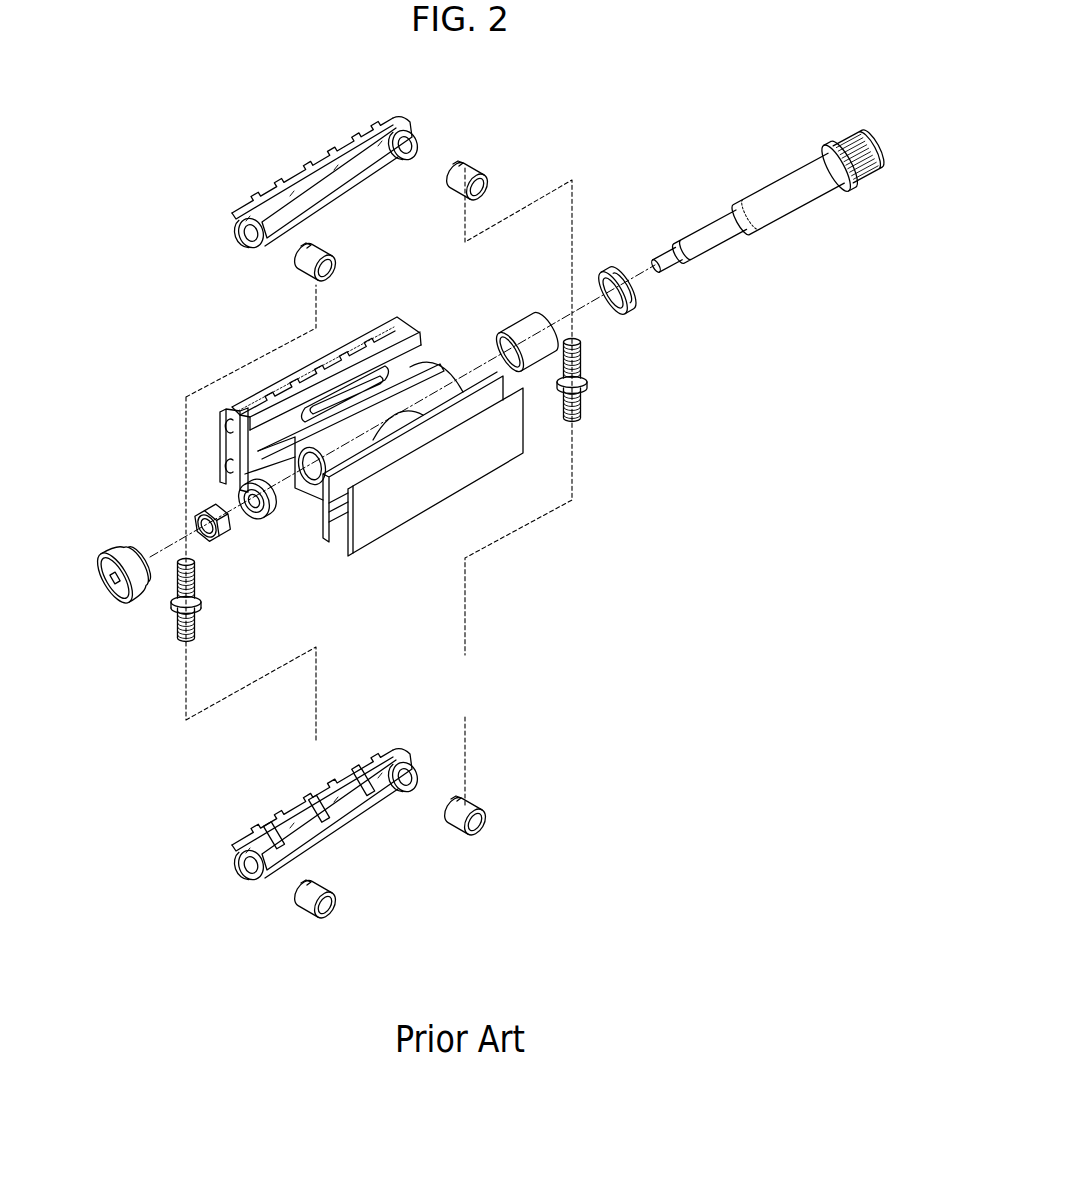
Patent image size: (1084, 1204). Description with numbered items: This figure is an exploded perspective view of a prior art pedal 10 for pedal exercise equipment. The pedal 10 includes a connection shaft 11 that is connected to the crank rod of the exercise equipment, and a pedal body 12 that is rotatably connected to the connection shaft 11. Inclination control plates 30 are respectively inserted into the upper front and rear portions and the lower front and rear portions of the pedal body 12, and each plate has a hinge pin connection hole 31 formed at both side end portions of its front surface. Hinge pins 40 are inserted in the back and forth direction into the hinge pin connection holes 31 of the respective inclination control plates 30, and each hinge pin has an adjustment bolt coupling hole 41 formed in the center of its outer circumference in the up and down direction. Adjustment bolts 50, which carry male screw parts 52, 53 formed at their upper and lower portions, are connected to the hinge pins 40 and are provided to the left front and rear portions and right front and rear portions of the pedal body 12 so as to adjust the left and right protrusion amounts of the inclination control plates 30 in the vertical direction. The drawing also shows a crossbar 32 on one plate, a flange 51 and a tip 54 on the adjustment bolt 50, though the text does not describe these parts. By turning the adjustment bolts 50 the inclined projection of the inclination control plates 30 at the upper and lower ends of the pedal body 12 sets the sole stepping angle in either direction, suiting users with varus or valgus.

The pedal 10 is at (603, 167).
The connection shaft 11 is at (790, 183).
The pedal body 12 is at (326, 441).
The inclination control plate 30 is at (360, 187).
The hinge pin connection hole 31 is at (262, 248).
The crossbar 32 is at (333, 840).
The hinge pin 40 is at (473, 184).
The adjustment bolt coupling hole 41 is at (458, 165).
The adjustment bolt 50 is at (392, 320).
The flange 51 is at (592, 428).
The male screw part 52 is at (614, 354).
The male screw part 53 is at (555, 439).
The bolt tip 54 is at (555, 308).